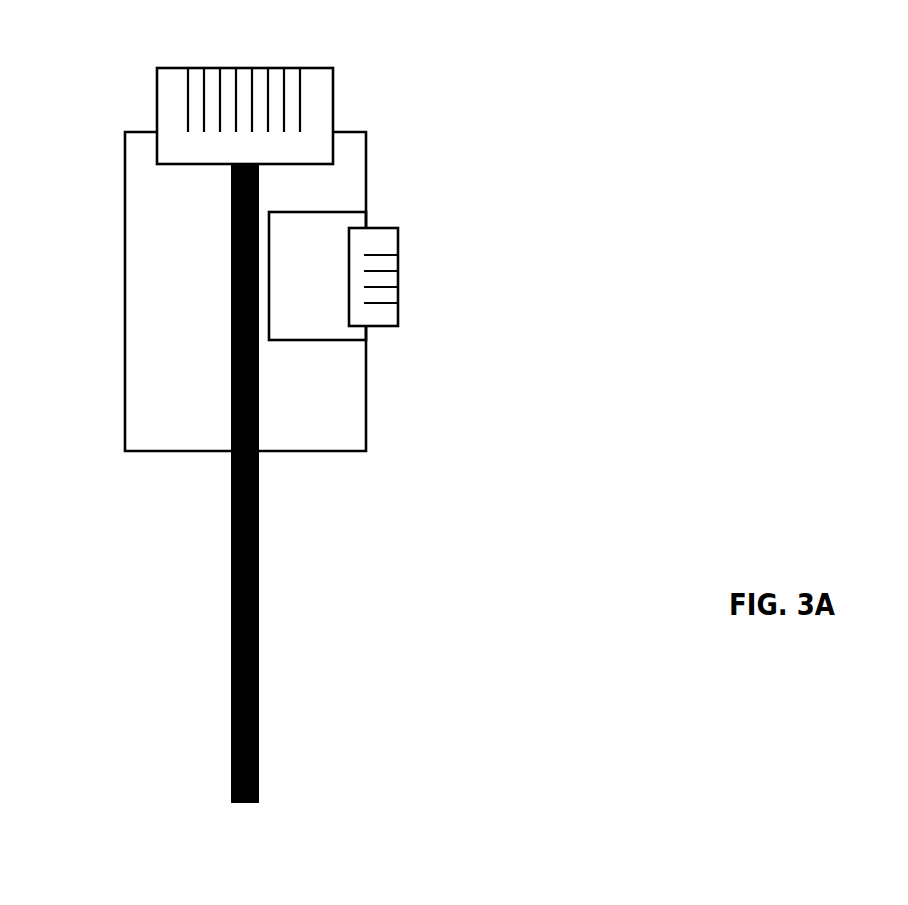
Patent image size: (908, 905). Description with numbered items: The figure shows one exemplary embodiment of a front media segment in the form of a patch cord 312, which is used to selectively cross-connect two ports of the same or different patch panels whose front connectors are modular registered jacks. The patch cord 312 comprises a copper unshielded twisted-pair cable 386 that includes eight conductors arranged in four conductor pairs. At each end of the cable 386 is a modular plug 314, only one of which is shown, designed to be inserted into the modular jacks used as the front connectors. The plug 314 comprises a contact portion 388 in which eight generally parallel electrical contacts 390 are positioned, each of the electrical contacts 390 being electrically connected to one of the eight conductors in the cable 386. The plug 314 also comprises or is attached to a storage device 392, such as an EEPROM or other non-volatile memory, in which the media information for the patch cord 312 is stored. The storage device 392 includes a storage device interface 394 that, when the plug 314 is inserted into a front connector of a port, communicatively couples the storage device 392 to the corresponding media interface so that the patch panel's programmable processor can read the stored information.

The patch cord 312 is at (430, 477).
The RJ-45 plug 314 is at (245, 291).
The UTP cable 386 is at (259, 563).
The contact portion 388 is at (155, 113).
The electrical contacts 390 is at (303, 83).
The storage device 392 is at (317, 276).
The storage device interface 394 is at (398, 235).